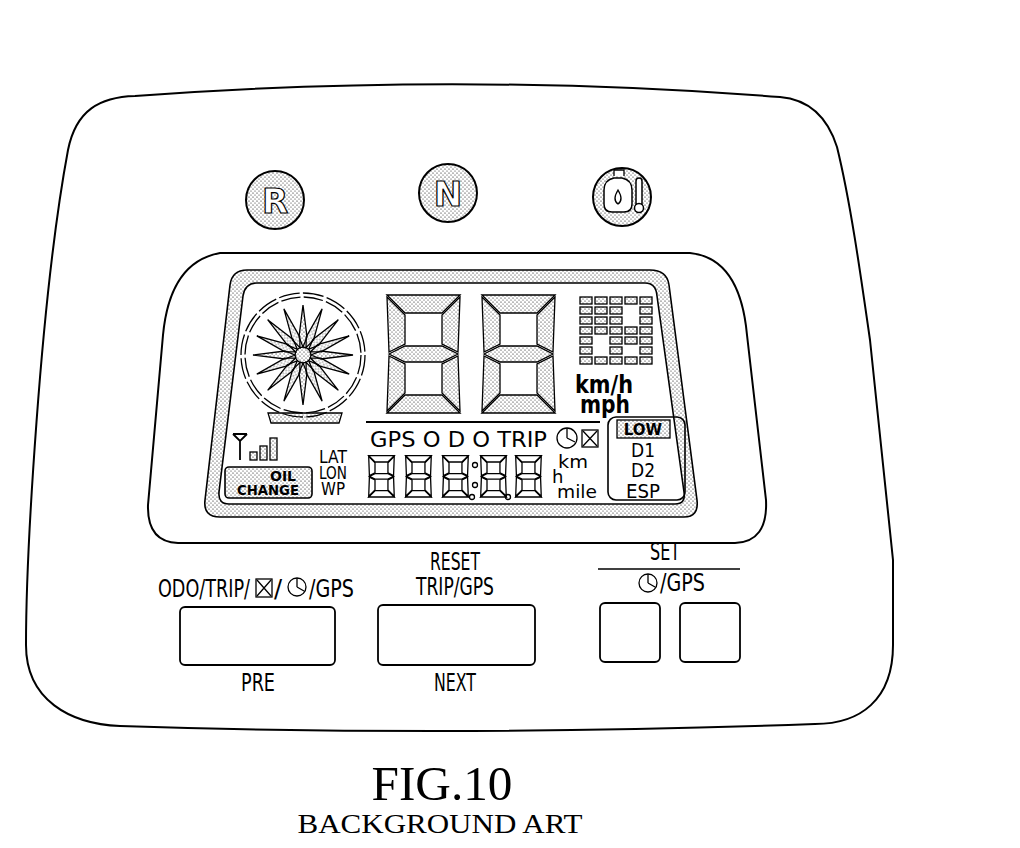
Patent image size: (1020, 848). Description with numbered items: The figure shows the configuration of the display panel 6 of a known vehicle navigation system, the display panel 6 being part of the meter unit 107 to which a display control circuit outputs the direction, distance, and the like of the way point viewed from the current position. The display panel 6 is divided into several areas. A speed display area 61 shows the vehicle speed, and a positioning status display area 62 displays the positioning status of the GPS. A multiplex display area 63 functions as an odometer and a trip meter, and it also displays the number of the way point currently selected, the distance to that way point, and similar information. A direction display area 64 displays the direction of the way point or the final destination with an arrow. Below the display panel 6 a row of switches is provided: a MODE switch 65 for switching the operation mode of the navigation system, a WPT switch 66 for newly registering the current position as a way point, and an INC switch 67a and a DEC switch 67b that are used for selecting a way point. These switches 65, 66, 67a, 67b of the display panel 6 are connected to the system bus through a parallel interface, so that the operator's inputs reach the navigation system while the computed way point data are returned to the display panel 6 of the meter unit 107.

The meter unit 107 is at (502, 78).
The display panel 6 is at (753, 383).
The speed display area 61 is at (478, 290).
The positioning status display area 62 is at (228, 448).
The multiplex display area 63 is at (458, 504).
The direction display area 64 is at (310, 298).
The MODE switch 65 is at (320, 651).
The WPT switch 66 is at (522, 655).
The INC switch 67a is at (640, 662).
The DEC switch 67b is at (740, 630).